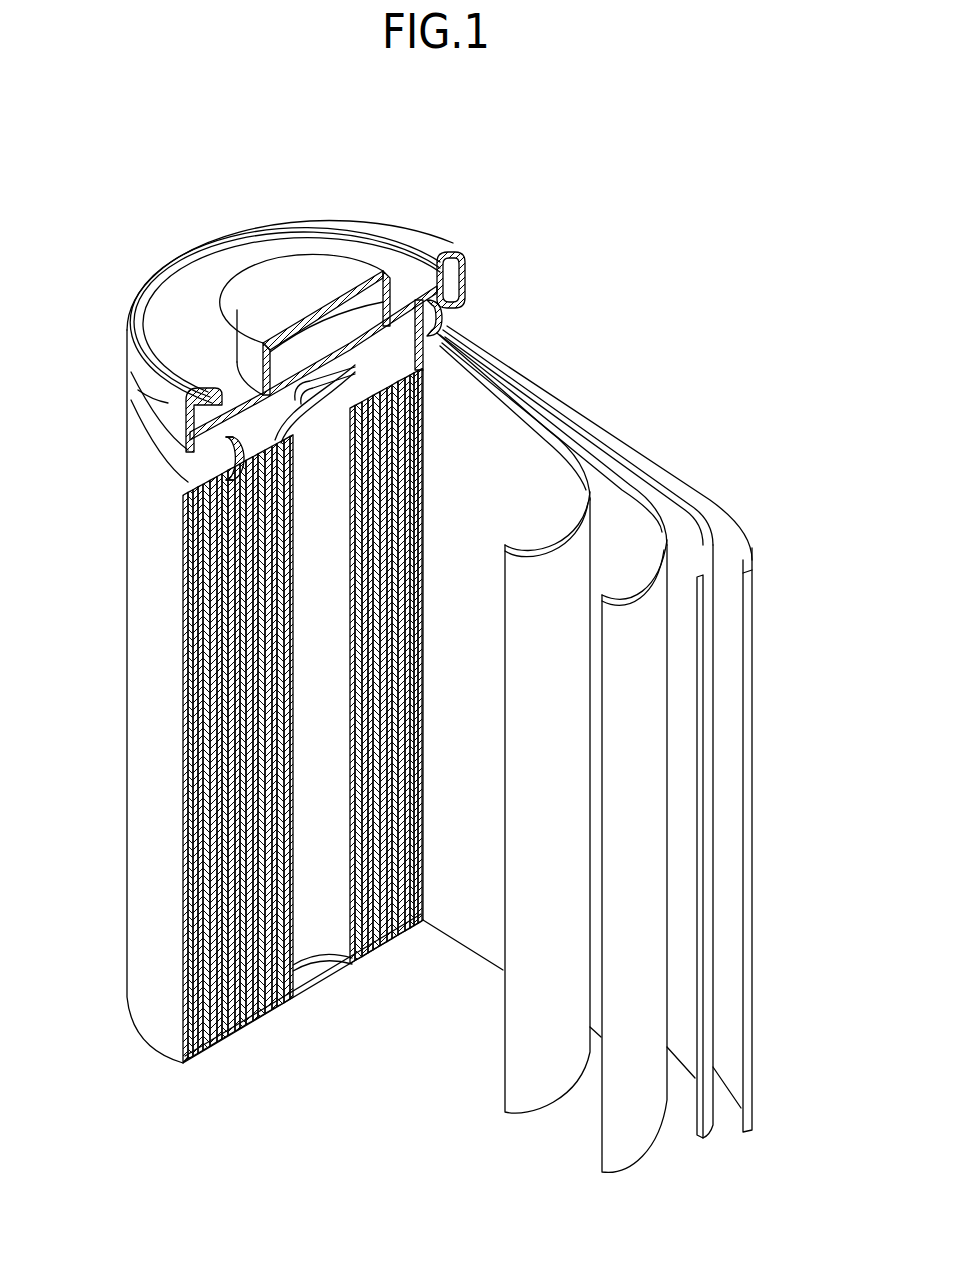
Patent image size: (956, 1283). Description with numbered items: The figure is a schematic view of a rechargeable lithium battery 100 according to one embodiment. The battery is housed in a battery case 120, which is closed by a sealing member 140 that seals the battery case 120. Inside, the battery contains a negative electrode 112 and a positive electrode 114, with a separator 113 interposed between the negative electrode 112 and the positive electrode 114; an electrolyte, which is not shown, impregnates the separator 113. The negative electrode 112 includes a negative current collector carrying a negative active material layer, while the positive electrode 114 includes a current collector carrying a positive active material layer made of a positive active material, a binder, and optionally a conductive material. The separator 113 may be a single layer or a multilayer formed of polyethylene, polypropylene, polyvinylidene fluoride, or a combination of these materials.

The rechargeable lithium battery 100 is at (527, 204).
The negative electrode 112 is at (749, 548).
The separator 113 is at (541, 432).
The positive electrode 114 is at (629, 492).
The battery case 120 is at (138, 643).
The sealing member 140 is at (262, 285).